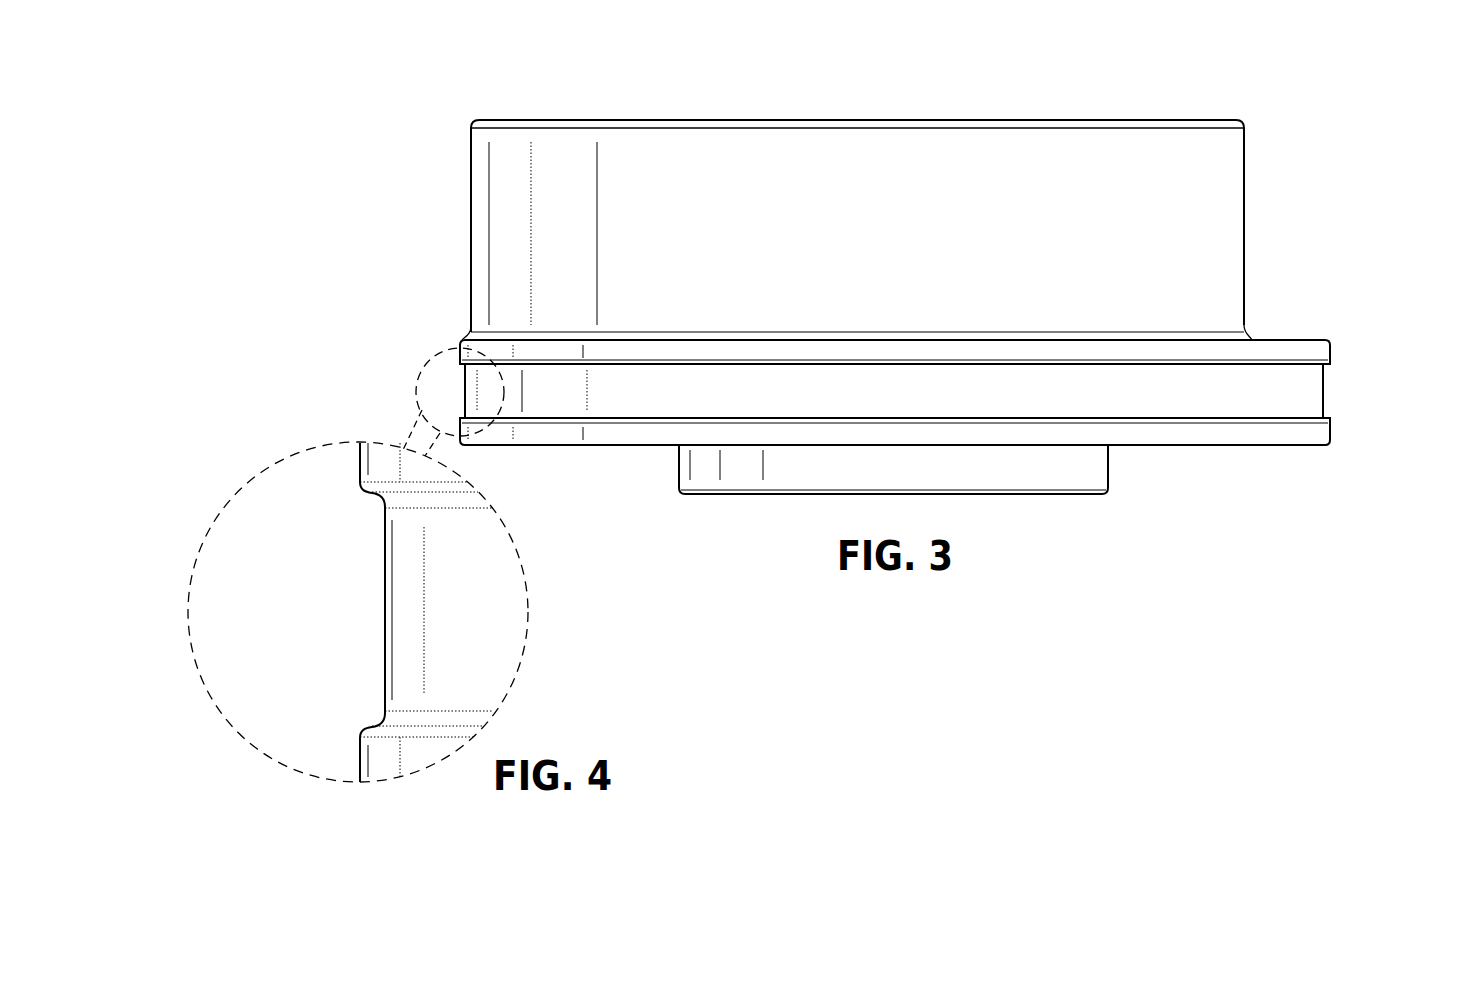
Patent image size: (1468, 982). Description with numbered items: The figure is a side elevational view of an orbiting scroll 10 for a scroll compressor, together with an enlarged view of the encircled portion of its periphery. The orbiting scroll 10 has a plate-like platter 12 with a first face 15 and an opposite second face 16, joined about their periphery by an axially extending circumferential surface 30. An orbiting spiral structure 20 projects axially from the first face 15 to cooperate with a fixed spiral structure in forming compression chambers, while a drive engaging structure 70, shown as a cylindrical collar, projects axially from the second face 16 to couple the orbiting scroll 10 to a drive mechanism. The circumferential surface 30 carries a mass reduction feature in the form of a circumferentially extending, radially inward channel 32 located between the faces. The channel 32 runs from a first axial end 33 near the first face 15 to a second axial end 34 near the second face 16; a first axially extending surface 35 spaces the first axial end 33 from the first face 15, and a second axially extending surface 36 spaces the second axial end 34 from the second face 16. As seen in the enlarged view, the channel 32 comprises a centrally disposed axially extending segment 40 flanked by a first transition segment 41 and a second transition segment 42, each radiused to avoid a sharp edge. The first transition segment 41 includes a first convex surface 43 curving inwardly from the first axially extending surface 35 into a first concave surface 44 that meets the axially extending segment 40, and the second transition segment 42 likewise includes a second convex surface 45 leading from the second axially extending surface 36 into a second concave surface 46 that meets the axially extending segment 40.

In FIG. 3, the orbiting scroll 10 is at (450, 118).
In FIG. 3, the orbiting spiral structure 20 is at (950, 120).
In FIG. 3, the platter 12 is at (1323, 335).
In FIG. 3, the first face 15 is at (1270, 338).
In FIG. 3, the second face 16 is at (1268, 447).
In FIG. 3, the circumferential surface 30 is at (1330, 352).
In FIG. 3, the channel 32 is at (1328, 397).
In FIG. 4, the channel 32 is at (367, 595).
In FIG. 3, the drive engaging structure 70 is at (1087, 497).
In FIG. 4, the first axial end 33 is at (357, 482).
In FIG. 4, the second axial end 34 is at (360, 738).
In FIG. 4, the first axially extending surface 35 is at (357, 466).
In FIG. 4, the second axially extending surface 36 is at (353, 755).
In FIG. 4, the axially extending segment 40 is at (383, 645).
In FIG. 4, the first transition segment 41 is at (350, 502).
In FIG. 4, the second transition segment 42 is at (350, 720).
In FIG. 4, the first convex surface 43 is at (357, 492).
In FIG. 4, the first concave surface 44 is at (383, 505).
In FIG. 4, the second convex surface 45 is at (360, 730).
In FIG. 4, the second concave surface 46 is at (383, 710).